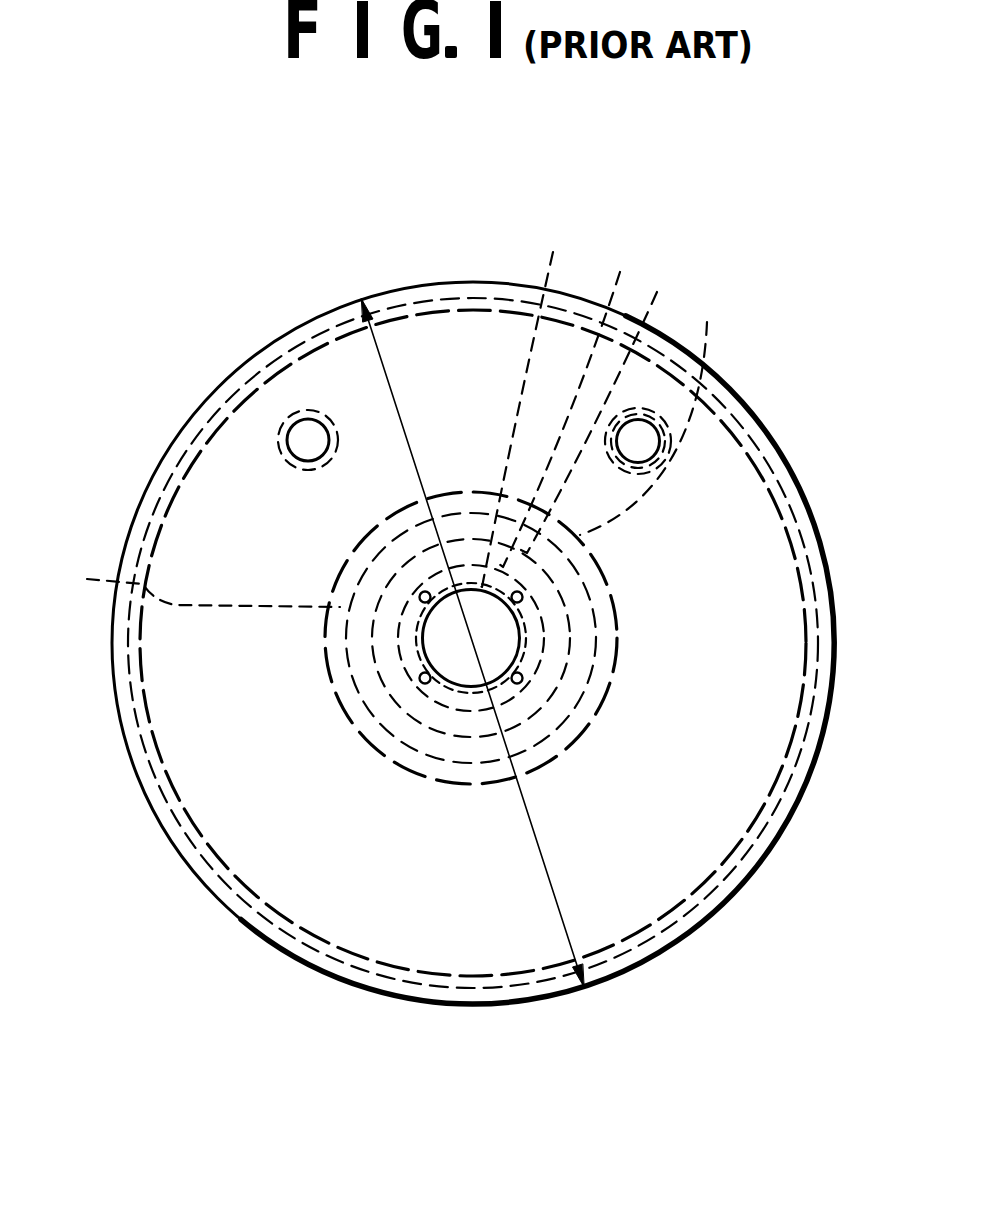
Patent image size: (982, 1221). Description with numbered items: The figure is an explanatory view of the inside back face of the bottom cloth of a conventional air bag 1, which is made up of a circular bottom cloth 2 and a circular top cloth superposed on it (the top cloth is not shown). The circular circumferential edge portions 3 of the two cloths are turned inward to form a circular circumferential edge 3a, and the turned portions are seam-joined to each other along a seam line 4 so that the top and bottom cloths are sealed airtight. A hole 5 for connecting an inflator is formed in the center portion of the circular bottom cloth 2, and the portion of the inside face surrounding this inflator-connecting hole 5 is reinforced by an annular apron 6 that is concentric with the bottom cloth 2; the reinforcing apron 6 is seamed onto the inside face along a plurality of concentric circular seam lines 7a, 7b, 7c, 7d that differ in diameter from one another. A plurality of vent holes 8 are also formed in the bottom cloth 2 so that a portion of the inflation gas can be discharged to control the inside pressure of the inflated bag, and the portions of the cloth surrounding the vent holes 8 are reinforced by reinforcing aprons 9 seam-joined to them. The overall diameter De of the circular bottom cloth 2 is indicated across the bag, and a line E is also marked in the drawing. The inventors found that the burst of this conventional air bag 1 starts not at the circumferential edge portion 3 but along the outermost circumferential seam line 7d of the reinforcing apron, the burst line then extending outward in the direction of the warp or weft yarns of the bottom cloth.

The air bag 1 is at (241, 279).
The circular bottom cloth 2 is at (459, 323).
The circular circumferential edge portion 3 is at (247, 925).
The circular circumferential edge 3a is at (213, 893).
The seam line 4 is at (168, 808).
The hole for connecting an inflator 5 is at (458, 672).
The annular apron 6 is at (604, 582).
The concentric circular seam line 7a is at (533, 400).
The concentric circular seam line 7b is at (569, 397).
The concentric circular seam line 7c is at (602, 402).
The outermost circumferential seam line 7d is at (651, 406).
The vent hole 8 is at (303, 423).
The reinforcing apron 9 is at (280, 434).
The edge line E is at (196, 584).
The diameter of the circular bottom cloth De is at (560, 900).